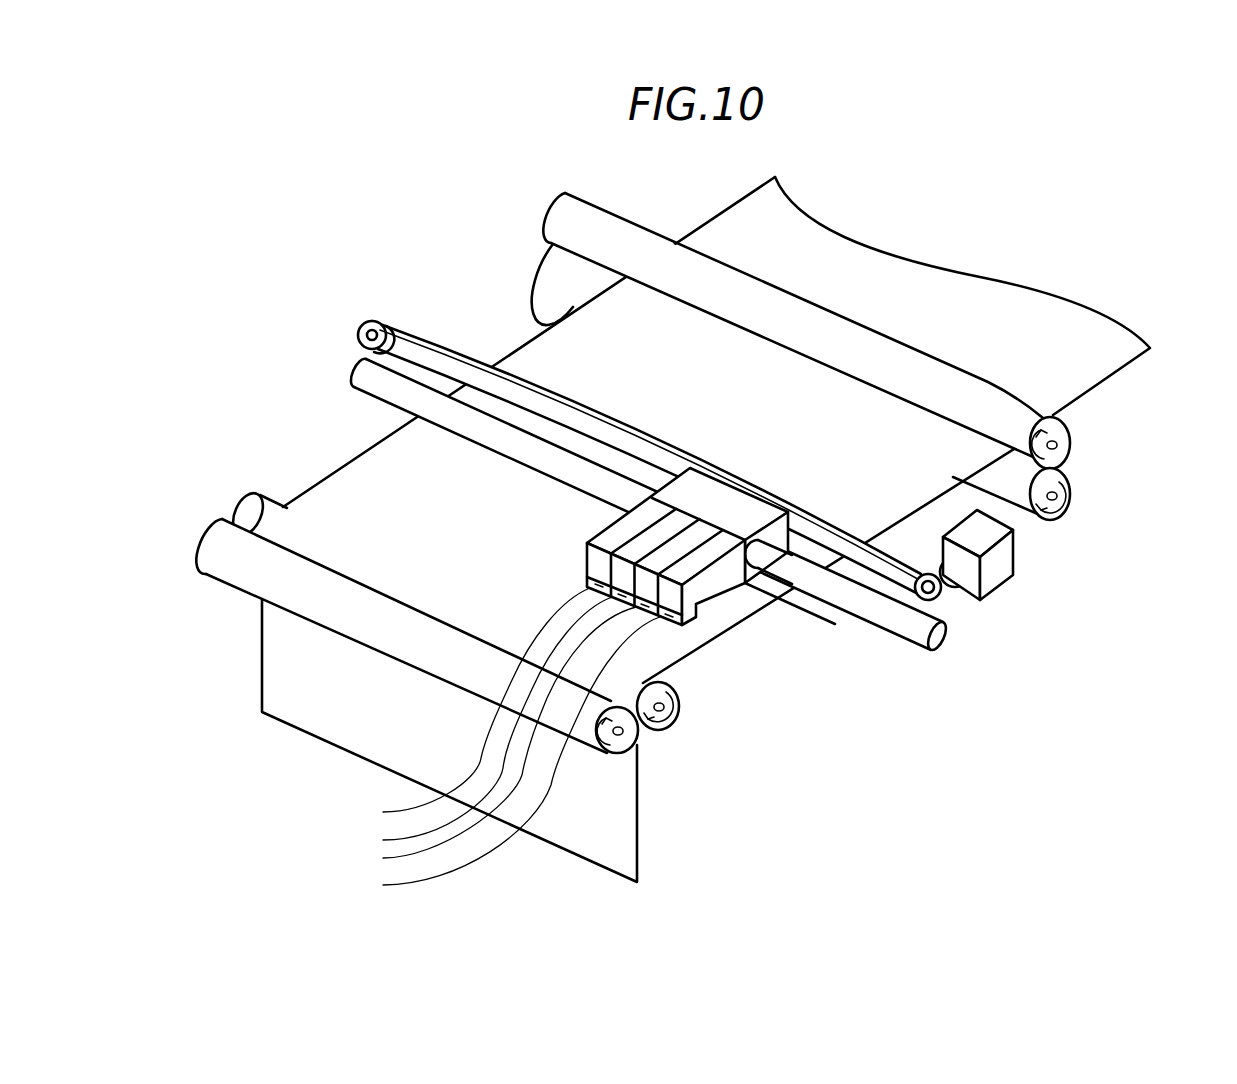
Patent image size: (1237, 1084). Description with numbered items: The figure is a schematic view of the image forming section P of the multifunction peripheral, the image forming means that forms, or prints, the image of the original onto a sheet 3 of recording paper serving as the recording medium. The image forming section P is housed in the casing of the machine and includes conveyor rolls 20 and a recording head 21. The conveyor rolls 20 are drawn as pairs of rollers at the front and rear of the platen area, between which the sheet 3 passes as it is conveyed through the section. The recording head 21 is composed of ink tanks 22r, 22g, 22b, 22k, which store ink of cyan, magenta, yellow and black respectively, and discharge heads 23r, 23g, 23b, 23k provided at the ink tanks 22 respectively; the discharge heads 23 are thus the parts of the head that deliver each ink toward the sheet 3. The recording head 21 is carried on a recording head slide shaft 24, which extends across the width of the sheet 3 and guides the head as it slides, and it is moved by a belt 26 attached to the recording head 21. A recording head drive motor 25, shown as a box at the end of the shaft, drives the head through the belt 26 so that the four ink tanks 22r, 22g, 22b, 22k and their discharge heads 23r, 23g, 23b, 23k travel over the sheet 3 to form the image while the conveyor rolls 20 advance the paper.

The sheet 3 is at (775, 213).
The image forming section P is at (1126, 188).
The conveyor rolls 20 is at (1074, 432).
The recording head 21 is at (735, 513).
The ink tanks 22 is at (848, 660).
The ink tank 22r is at (597, 578).
The ink tank 22g is at (620, 590).
The ink tank 22b is at (700, 578).
The ink tank 22k is at (740, 542).
The discharge heads 23 is at (477, 744).
The discharge head 23r is at (466, 706).
The discharge head 23g is at (477, 724).
The discharge head 23b is at (489, 740).
The discharge head 23k is at (330, 800).
The recording head slide shaft 24 is at (874, 626).
The recording head drive motor 25 is at (1003, 588).
The belt 26 is at (388, 322).